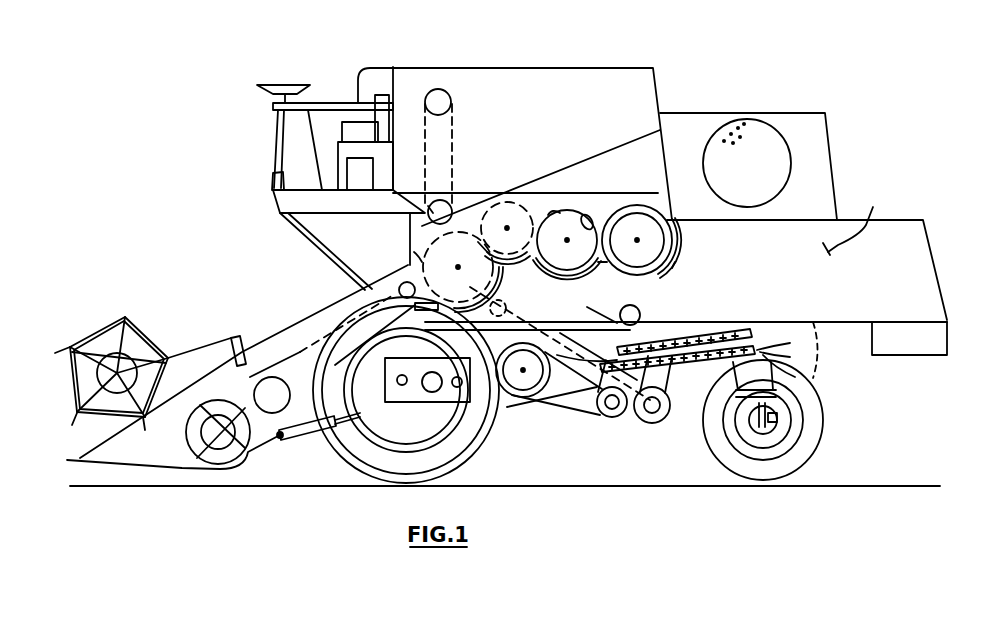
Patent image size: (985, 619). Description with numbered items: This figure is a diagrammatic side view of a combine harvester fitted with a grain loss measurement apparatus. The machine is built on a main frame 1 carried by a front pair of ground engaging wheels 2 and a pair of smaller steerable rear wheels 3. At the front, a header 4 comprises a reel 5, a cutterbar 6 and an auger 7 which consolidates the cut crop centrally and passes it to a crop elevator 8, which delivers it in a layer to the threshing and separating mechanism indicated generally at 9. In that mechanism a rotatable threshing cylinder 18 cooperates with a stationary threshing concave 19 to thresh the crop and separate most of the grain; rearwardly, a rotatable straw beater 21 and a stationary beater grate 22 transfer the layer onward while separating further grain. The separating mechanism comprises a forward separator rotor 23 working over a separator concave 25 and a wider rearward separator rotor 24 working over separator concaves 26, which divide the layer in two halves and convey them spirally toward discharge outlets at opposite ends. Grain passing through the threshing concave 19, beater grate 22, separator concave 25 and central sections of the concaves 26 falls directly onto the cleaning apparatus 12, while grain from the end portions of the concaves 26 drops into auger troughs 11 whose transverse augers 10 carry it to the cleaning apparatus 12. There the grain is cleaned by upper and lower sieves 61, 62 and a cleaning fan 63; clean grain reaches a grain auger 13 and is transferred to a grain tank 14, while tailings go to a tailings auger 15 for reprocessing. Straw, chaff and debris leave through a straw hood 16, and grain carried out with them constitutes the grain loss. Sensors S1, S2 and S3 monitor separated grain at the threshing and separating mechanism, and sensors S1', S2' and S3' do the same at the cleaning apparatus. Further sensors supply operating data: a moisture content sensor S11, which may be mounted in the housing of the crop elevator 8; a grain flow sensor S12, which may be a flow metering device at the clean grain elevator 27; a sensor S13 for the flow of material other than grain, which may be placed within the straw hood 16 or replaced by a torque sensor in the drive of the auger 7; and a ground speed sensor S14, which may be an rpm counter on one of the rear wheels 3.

The main frame 1 is at (457, 345).
The front ground engaging wheels 2 is at (480, 452).
The steerable rear wheels 3 is at (810, 450).
The header 4 is at (178, 324).
The reel 5 is at (97, 330).
The cutterbar 6 is at (172, 470).
The auger 7 is at (240, 452).
The crop elevator 8 is at (277, 334).
The threshing and separating mechanism 9 is at (604, 190).
The transverse augers 10 is at (667, 284).
The auger troughs 11 is at (665, 303).
The cleaning apparatus 12 is at (736, 326).
The grain auger 13 is at (608, 417).
The grain tank 14 is at (526, 69).
The tailings auger 15 is at (650, 423).
The straw hood 16 is at (937, 303).
The threshing cylinder 18 is at (414, 252).
The threshing concave 19 is at (460, 303).
The straw beater 21 is at (455, 206).
The beater grate 22 is at (500, 258).
The forward separator rotor 23 is at (560, 213).
The rearward separator rotor 24 is at (648, 212).
The forward separator concave 25 is at (585, 270).
The rearward separator concaves 26 is at (668, 256).
The clean grain elevator 27 is at (453, 171).
The upper sieve 61 is at (718, 332).
The lower sieve 62 is at (692, 372).
The cleaning fan 63 is at (531, 400).
The sensor S1 is at (588, 307).
The sensor S2 is at (695, 273).
The sensor S3 is at (595, 213).
The sensor S1' is at (807, 372).
The sensor S2' is at (806, 357).
The sensor S3' is at (804, 338).
The moisture content sensor S11 is at (340, 428).
The grain flow sensor S12 is at (433, 213).
The MOG flow sensor S13 is at (862, 218).
The ground speed sensor S14 is at (777, 420).